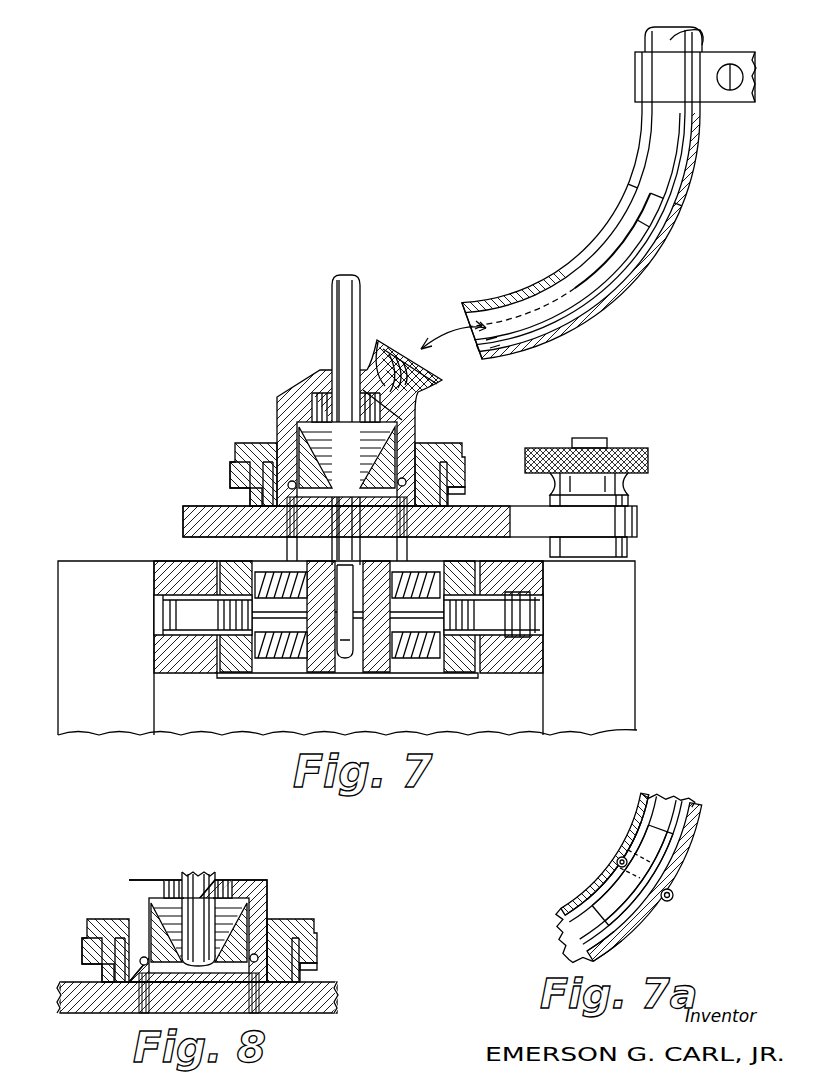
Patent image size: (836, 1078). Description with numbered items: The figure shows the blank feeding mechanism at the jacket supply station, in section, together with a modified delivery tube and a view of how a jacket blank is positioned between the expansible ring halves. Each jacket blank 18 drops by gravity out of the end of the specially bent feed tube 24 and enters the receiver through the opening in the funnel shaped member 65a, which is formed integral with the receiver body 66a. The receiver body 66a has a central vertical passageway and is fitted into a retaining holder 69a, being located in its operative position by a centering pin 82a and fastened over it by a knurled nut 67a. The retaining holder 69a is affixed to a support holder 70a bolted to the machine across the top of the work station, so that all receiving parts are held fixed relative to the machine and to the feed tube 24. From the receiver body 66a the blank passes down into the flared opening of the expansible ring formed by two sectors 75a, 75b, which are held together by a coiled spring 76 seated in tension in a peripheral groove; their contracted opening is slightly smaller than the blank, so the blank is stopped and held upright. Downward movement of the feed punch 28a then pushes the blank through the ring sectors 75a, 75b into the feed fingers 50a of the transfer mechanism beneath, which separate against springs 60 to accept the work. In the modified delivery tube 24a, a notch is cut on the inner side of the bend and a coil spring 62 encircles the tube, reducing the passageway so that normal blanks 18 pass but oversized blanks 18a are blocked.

In FIG. 7, the jacket blank 18 is at (552, 292).
In FIG. 8, the jacket blank 18 is at (196, 876).
In FIG. 7, the feed tube 24 is at (481, 297).
In FIG. 7, the feed punch 28a is at (340, 306).
In FIG. 7, the receiver body 66a is at (288, 410).
In FIG. 8, the receiver body 66a is at (156, 880).
In FIG. 7, the funnel shaped member 65a is at (424, 373).
In FIG. 7, the expansible ring sector 75a is at (300, 441).
In FIG. 8, the expansible ring sector 75a is at (148, 921).
In FIG. 7, the expansible ring sector 75b is at (410, 443).
In FIG. 8, the expansible ring sector 75b is at (264, 921).
In FIG. 7, the knurled nut 67a is at (450, 452).
In FIG. 8, the knurled nut 67a is at (90, 924).
In FIG. 7, the centering pin 82a is at (240, 470).
In FIG. 8, the centering pin 82a is at (88, 945).
In FIG. 7, the retaining holder 69a is at (250, 498).
In FIG. 8, the retaining holder 69a is at (100, 972).
In FIG. 7, the coiled spring 76 is at (448, 497).
In FIG. 8, the coiled spring 76 is at (300, 970).
In FIG. 7, the support holder 70a is at (637, 521).
In FIG. 8, the support holder 70a is at (338, 1001).
In FIG. 7, the feed fingers 50a is at (313, 568).
In FIG. 7, the springs 60 is at (425, 572).
In FIG. 7A, the oversized jacket blank 18a is at (665, 866).
In FIG. 7A, the coil spring 62 is at (676, 896).
In FIG. 7A, the delivery tube 24a is at (620, 930).